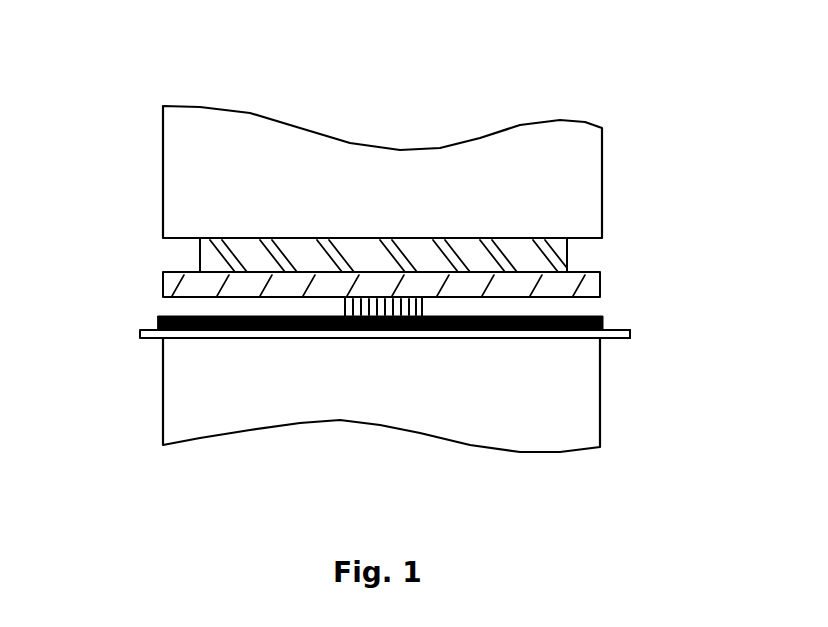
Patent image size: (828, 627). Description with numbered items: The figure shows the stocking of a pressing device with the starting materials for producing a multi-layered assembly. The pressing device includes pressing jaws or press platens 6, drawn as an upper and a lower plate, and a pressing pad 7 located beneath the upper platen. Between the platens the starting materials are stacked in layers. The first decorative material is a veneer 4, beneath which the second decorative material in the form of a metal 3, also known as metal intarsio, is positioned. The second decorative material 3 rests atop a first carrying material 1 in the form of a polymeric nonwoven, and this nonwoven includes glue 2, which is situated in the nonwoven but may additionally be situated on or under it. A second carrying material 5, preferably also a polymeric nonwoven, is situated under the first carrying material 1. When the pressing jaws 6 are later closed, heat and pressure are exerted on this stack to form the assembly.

The first carrying material 1 is at (152, 318).
The glue 2 is at (140, 328).
The second decorative material 3 is at (387, 305).
The first decorative material 4 is at (598, 292).
The second carrying material 5 is at (630, 332).
The pressing jaws or press platens 6 is at (535, 137).
The pressing pad 7 is at (405, 253).